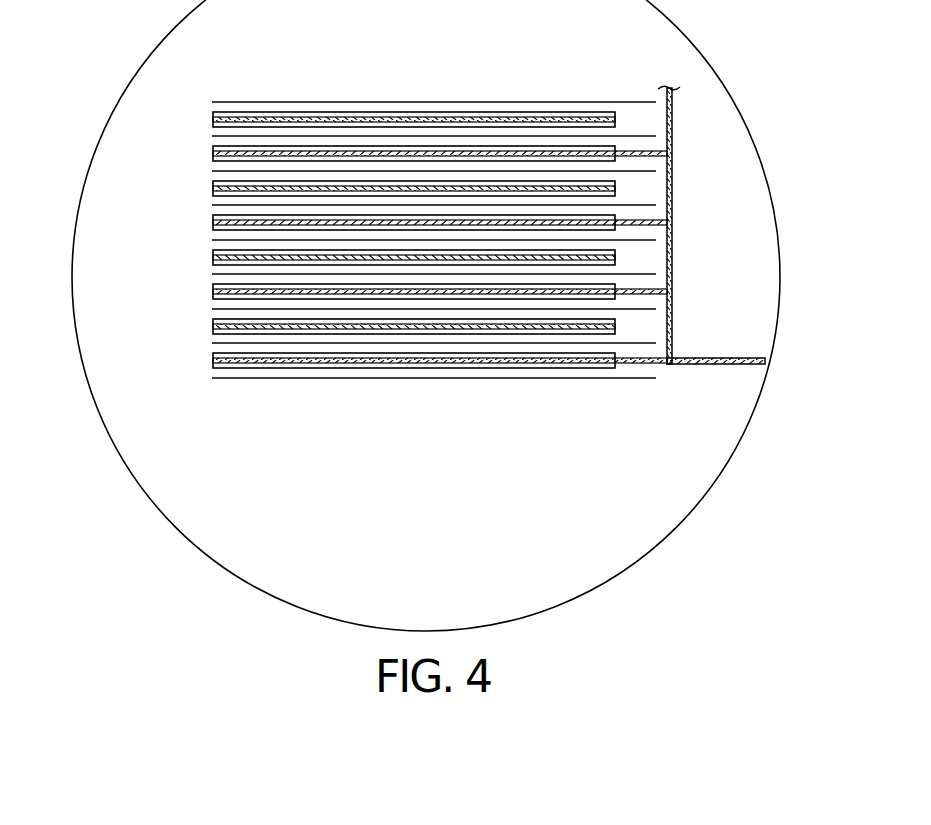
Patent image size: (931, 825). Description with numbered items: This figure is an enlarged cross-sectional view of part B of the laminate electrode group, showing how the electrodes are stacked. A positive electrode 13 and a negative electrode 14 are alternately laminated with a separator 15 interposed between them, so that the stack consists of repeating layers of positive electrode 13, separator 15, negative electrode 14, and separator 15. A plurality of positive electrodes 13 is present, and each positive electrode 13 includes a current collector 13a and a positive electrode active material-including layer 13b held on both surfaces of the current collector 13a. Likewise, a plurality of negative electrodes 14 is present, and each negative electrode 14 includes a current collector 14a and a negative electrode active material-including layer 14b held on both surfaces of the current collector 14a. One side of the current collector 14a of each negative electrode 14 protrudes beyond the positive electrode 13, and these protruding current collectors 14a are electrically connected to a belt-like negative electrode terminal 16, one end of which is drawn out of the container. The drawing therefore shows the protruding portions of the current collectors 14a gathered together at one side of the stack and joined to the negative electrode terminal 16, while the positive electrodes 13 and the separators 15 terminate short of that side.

The positive electrode 13 is at (352, 246).
The current collector 13a is at (214, 326).
The positive electrode active material-including layer 13b is at (214, 320).
The negative electrode 14 is at (372, 306).
The current collector 14a is at (646, 151).
The negative electrode active material-including layer 14b is at (214, 356).
The separator 15 is at (492, 102).
The belt-like negative electrode terminal 16 is at (718, 366).
The part B is at (670, 535).